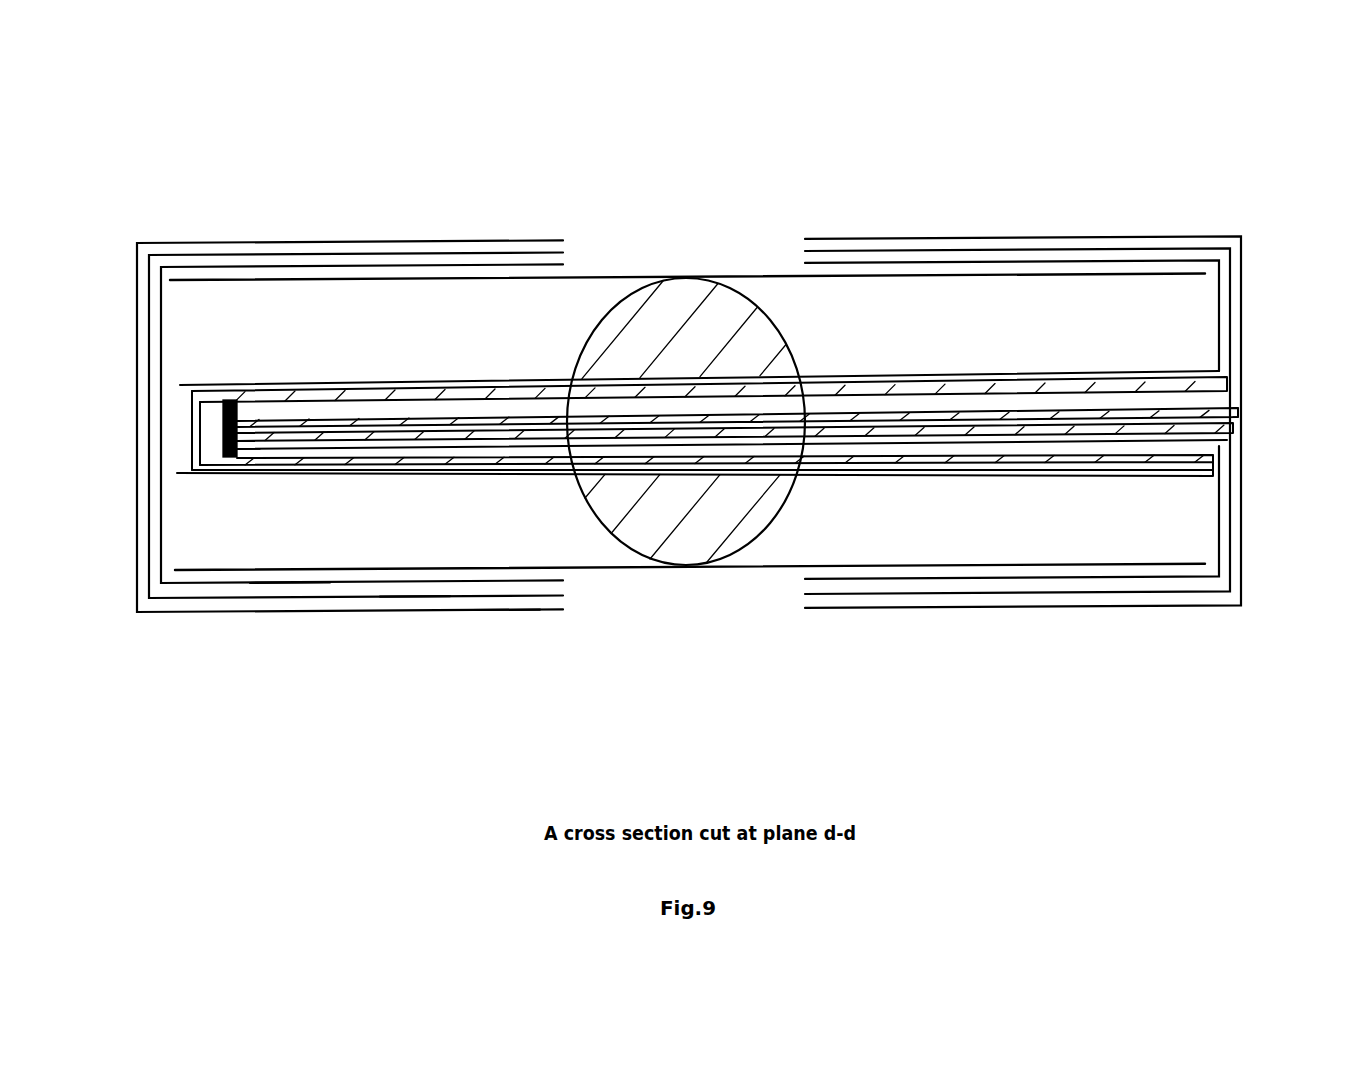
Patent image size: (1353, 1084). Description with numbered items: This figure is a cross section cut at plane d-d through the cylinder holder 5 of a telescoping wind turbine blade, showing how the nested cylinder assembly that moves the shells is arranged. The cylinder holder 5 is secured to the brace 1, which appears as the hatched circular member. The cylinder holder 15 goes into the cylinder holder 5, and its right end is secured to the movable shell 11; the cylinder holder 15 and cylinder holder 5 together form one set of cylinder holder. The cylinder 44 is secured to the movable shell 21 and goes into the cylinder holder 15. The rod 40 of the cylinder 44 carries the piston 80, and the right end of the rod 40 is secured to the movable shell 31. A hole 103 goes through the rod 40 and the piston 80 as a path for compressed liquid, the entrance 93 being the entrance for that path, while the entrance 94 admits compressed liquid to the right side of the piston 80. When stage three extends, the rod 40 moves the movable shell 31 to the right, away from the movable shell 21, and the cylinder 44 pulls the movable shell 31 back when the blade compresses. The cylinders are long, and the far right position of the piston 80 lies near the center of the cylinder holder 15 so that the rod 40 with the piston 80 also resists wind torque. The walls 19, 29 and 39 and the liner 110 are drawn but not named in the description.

The brace 1 is at (778, 497).
The cylinder holder 5 is at (880, 477).
The movable shell 11 is at (1216, 342).
The cylinder holder 15 is at (437, 472).
The inner bottom wall 19 is at (282, 583).
The movable shell 21 is at (1229, 287).
The middle bottom wall 29 is at (412, 598).
The movable shell 31 is at (1213, 233).
The outer bottom wall 39 is at (505, 612).
The rod 40 is at (304, 440).
The cylinder 44 is at (193, 430).
The piston 80 is at (222, 437).
The entrance 93 is at (1236, 432).
The entrance 94 is at (1217, 456).
The hole 103 is at (283, 412).
The inner liner 110 is at (1047, 277).